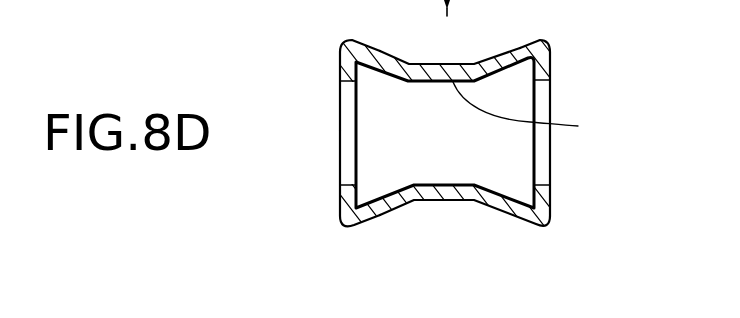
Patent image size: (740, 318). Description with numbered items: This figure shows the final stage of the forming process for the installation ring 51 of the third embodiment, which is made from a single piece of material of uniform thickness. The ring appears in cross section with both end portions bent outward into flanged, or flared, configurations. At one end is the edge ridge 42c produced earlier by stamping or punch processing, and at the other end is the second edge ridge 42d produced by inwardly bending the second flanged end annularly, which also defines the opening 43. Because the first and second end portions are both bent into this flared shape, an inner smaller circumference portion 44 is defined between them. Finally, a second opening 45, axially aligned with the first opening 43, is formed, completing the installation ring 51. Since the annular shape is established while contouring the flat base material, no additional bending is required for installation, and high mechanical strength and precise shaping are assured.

The edge ridge 42c is at (350, 40).
The second edge ridge 42d is at (340, 60).
The opening 43 is at (551, 89).
The inner smaller circumference portion 44 is at (532, 112).
The second opening 45 is at (340, 176).
The installation ring 51 is at (562, 218).